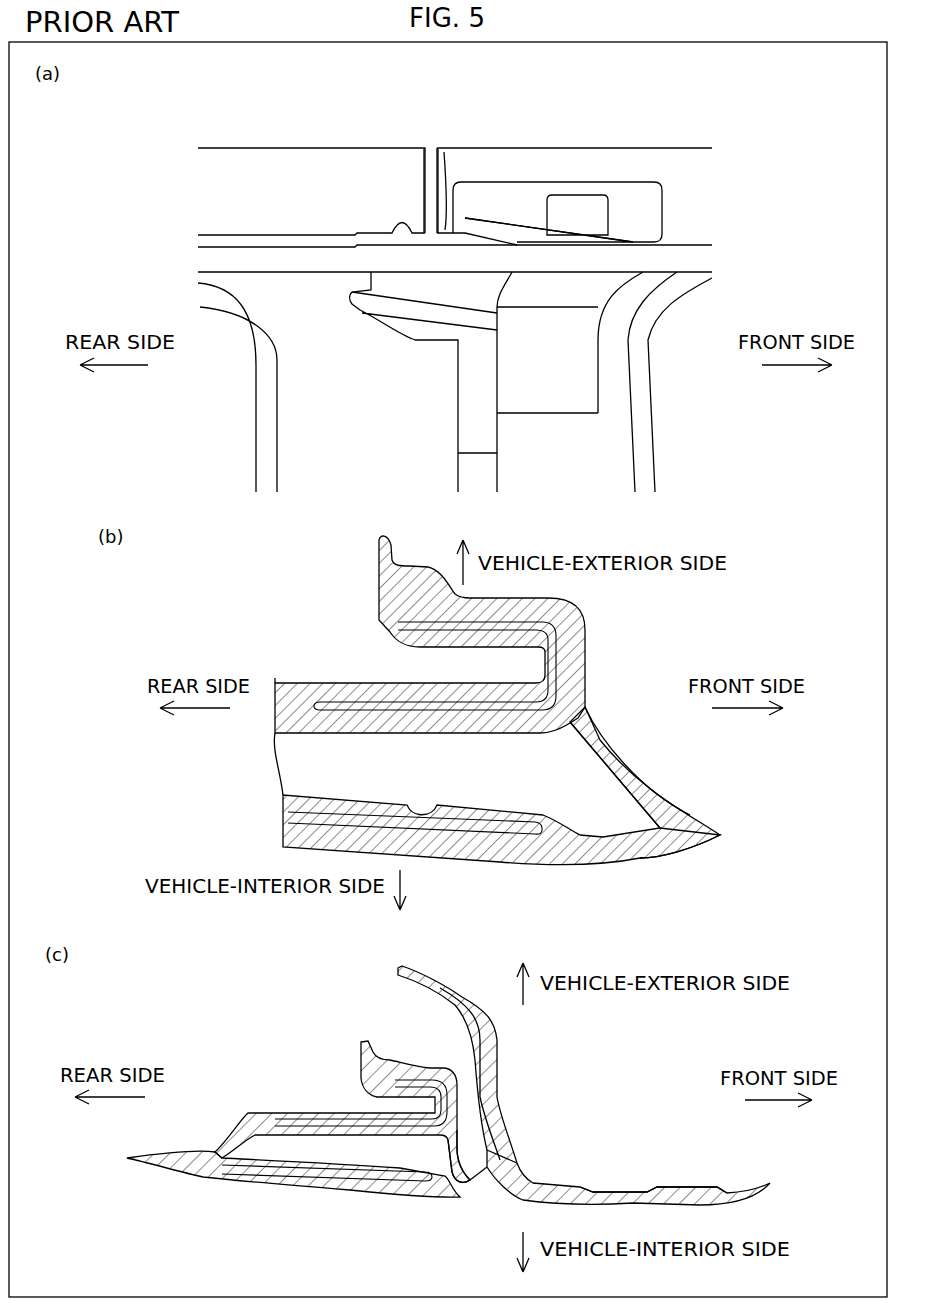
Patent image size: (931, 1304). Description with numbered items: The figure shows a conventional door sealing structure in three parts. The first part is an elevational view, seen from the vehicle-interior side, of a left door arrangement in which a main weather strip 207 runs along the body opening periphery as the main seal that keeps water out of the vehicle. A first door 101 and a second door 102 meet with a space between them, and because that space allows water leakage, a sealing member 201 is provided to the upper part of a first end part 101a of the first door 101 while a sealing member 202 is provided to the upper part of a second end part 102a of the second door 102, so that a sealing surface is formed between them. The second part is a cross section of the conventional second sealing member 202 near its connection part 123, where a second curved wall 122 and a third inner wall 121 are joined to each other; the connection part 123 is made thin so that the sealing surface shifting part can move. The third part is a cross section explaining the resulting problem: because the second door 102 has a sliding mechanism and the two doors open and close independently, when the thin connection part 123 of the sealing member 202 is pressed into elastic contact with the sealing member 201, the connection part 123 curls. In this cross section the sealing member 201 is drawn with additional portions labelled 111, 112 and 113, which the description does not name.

The first door 101 is at (632, 148).
The first end part 101a is at (448, 145).
The second door 102 is at (275, 148).
The second end part 102a is at (422, 146).
The pillar garnish body 111 is at (674, 1183).
The pillar garnish outer wall 112 is at (498, 1055).
The pillar garnish bent portion 113 is at (522, 1172).
The third inner wall 121 is at (480, 852).
The second curved wall 122 is at (623, 772).
The connection part 123 is at (676, 850).
The sealing member 201 is at (501, 221).
The sealing member 202 is at (451, 215).
The main weather strip 207 is at (705, 258).